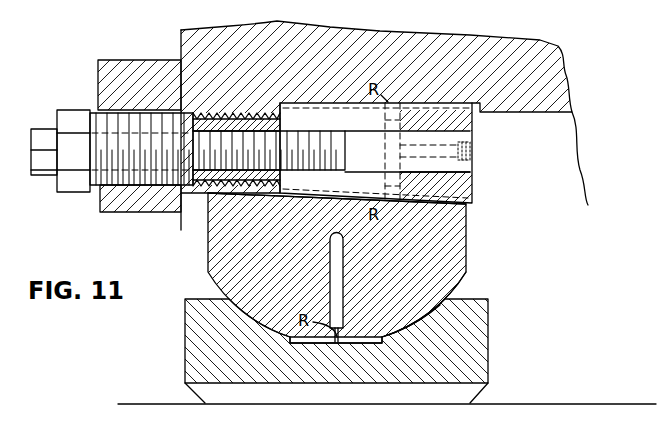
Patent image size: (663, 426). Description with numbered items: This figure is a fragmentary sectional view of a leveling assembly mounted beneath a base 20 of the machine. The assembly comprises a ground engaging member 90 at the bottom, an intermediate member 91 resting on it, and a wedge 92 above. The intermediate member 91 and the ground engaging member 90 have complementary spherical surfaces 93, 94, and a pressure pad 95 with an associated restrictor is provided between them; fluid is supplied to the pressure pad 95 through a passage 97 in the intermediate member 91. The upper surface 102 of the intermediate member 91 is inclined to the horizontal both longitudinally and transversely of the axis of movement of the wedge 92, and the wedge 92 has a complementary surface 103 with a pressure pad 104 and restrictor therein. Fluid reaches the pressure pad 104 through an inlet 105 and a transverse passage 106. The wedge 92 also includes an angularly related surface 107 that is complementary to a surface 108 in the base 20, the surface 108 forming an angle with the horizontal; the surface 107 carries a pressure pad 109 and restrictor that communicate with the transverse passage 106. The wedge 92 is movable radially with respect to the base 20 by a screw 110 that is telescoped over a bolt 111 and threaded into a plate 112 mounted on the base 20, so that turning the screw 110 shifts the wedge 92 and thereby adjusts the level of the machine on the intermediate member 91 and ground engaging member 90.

The base 20 is at (573, 78).
The ground engaging member 90 is at (481, 352).
The intermediate member 91 is at (467, 242).
The wedge 92 is at (462, 190).
The spherical surface 93 is at (423, 318).
The spherical surface 94 is at (443, 300).
The pressure pad 95 is at (380, 345).
The passage 97 is at (333, 282).
The upper surface 102 is at (455, 205).
The complementary surface 103 is at (299, 191).
The pressure pad 104 is at (388, 204).
The inlet 105 is at (478, 148).
The transverse passage 106 is at (376, 165).
The angularly related surface 107 is at (432, 103).
The base surface 108 is at (468, 101).
The pressure pad 109 is at (399, 102).
The screw 110 is at (192, 195).
The bolt 111 is at (40, 172).
The plate 112 is at (143, 66).